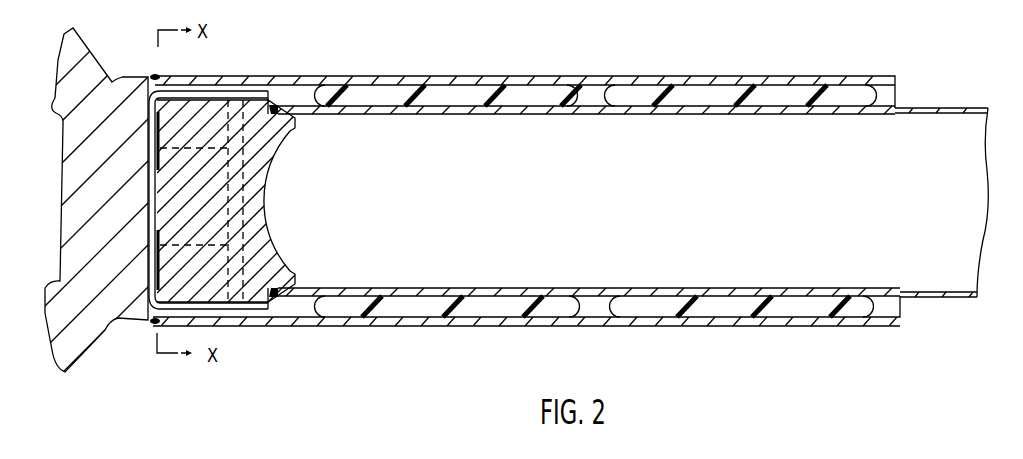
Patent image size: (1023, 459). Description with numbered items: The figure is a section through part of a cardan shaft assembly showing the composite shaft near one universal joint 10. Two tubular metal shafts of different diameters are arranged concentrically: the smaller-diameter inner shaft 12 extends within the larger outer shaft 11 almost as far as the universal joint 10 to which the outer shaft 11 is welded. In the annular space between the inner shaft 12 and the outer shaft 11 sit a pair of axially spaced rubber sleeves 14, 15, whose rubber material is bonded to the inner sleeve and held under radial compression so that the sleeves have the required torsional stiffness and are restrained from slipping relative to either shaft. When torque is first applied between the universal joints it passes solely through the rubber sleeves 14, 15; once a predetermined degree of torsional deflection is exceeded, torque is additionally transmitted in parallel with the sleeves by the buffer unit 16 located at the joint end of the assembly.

The universal joint 10 is at (93, 87).
The outer tubular metal shaft 11 is at (795, 81).
The inner tubular metal shaft 12 is at (933, 297).
The rubber sleeve 14 is at (721, 311).
The rubber sleeve 15 is at (352, 308).
The buffer unit 16 is at (227, 295).